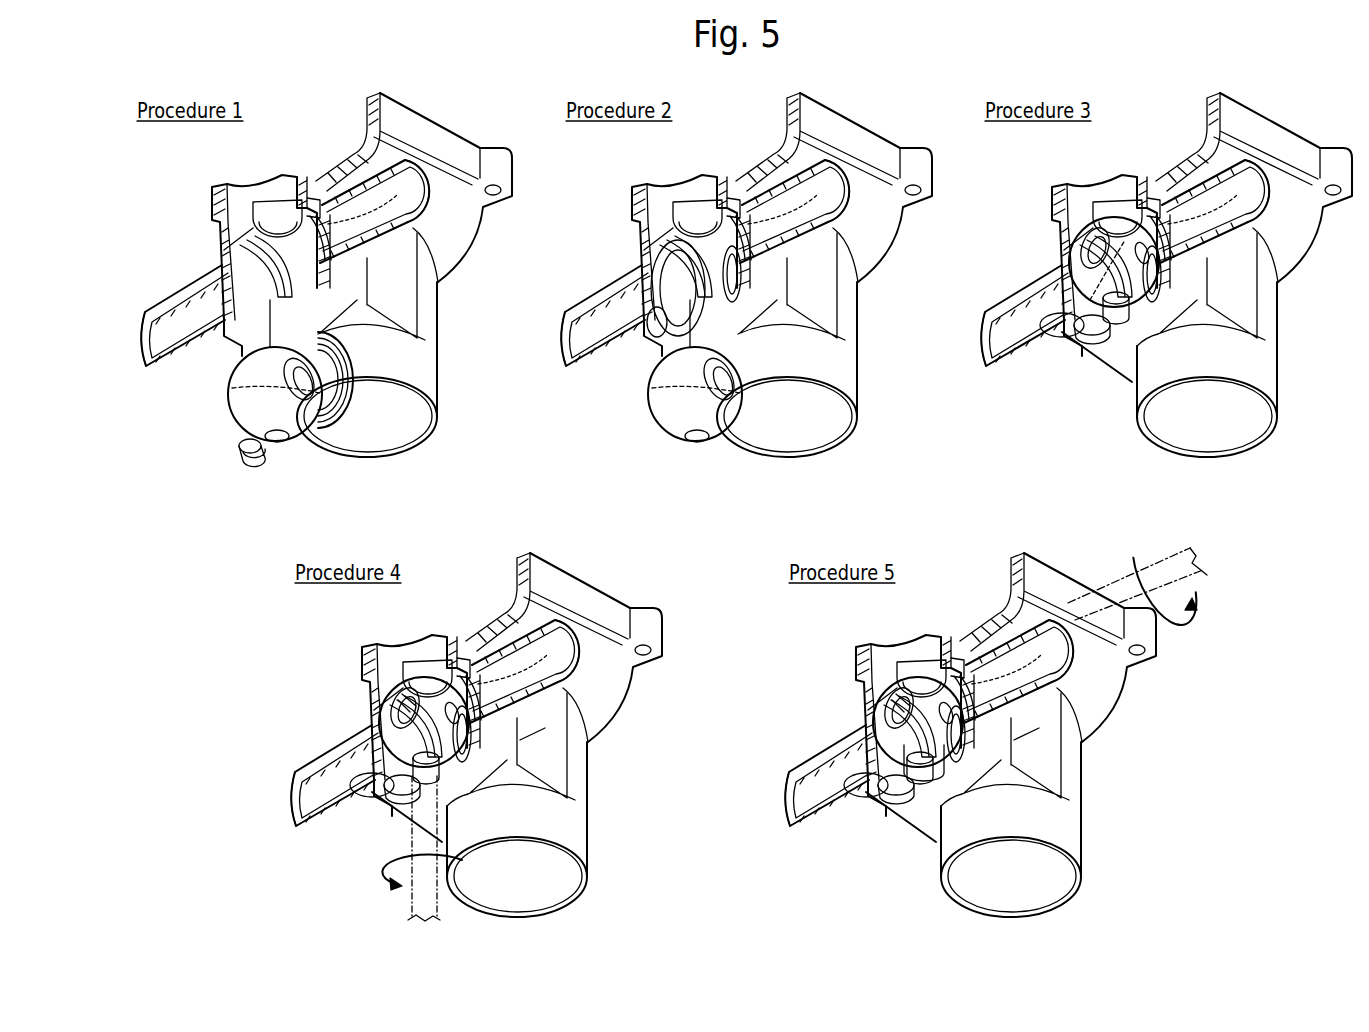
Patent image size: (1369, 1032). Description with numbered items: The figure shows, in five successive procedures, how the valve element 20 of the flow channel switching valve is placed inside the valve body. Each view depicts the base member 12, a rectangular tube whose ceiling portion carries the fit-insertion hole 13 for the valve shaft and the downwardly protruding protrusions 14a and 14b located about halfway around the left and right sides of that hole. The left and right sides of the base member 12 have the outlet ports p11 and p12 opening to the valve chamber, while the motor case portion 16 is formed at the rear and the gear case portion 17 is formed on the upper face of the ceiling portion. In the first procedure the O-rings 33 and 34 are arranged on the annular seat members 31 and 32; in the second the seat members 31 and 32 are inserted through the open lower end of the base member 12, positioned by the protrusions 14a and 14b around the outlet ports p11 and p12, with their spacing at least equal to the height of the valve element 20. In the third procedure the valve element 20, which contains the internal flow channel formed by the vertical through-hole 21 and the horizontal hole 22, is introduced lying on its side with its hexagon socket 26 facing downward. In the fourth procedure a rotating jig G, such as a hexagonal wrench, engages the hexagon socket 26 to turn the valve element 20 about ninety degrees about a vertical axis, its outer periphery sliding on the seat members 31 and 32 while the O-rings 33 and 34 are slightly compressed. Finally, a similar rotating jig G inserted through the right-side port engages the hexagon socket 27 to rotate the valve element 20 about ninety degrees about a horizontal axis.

The gear case portion 17 is at (418, 110).
The outlet port p12 is at (335, 205).
The motor case portion 16 is at (417, 362).
The base member 12 is at (232, 232).
The fit-insertion hole 13 is at (270, 202).
The protrusion 14a is at (232, 262).
The protrusion 14b is at (314, 200).
The outlet port p11 is at (205, 276).
The valve element 20 is at (232, 424).
The vertical through-hole 21 is at (232, 388).
The horizontal hole 22 is at (400, 695).
The hexagon socket 26 is at (274, 445).
The seat member 31 is at (248, 462).
The seat member 32 is at (325, 428).
The O-ring 33 is at (237, 447).
The O-ring 34 is at (352, 405).
The hexagon socket 27 is at (530, 745).
The rotating jig G is at (410, 906).